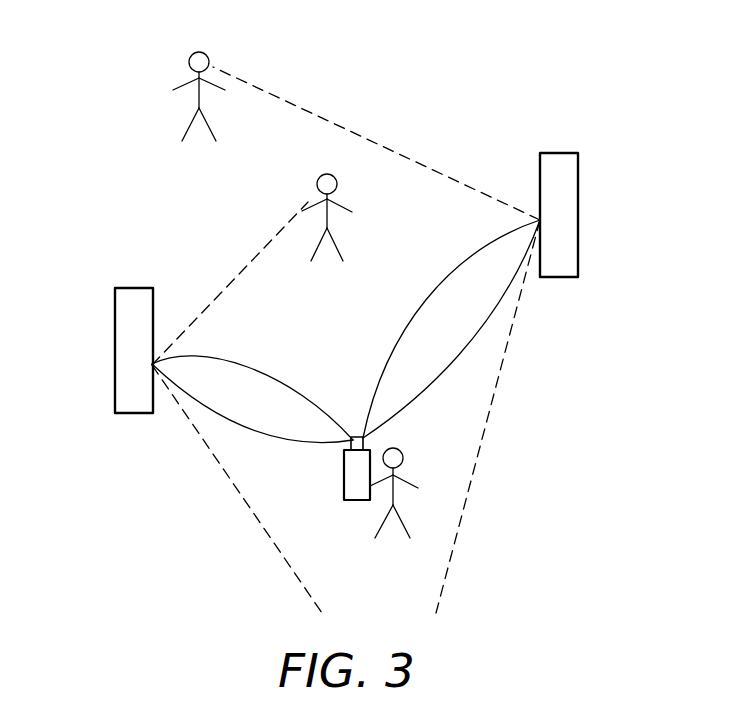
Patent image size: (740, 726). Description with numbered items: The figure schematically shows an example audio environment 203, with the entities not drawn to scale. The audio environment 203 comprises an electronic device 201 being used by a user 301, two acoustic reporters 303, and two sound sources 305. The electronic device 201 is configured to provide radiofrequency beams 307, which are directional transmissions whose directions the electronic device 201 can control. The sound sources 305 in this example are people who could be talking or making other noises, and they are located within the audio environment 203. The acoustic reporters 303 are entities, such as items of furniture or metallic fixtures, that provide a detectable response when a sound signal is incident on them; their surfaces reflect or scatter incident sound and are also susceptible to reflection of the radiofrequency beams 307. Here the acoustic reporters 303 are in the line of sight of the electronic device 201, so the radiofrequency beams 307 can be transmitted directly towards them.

The audio environment 203 is at (457, 63).
The acoustic reporter 303 is at (115, 300).
The sound source 305 is at (188, 62).
The radiofrequency beam 307 is at (262, 367).
The electronic device 201 is at (353, 500).
The user 301 is at (403, 450).